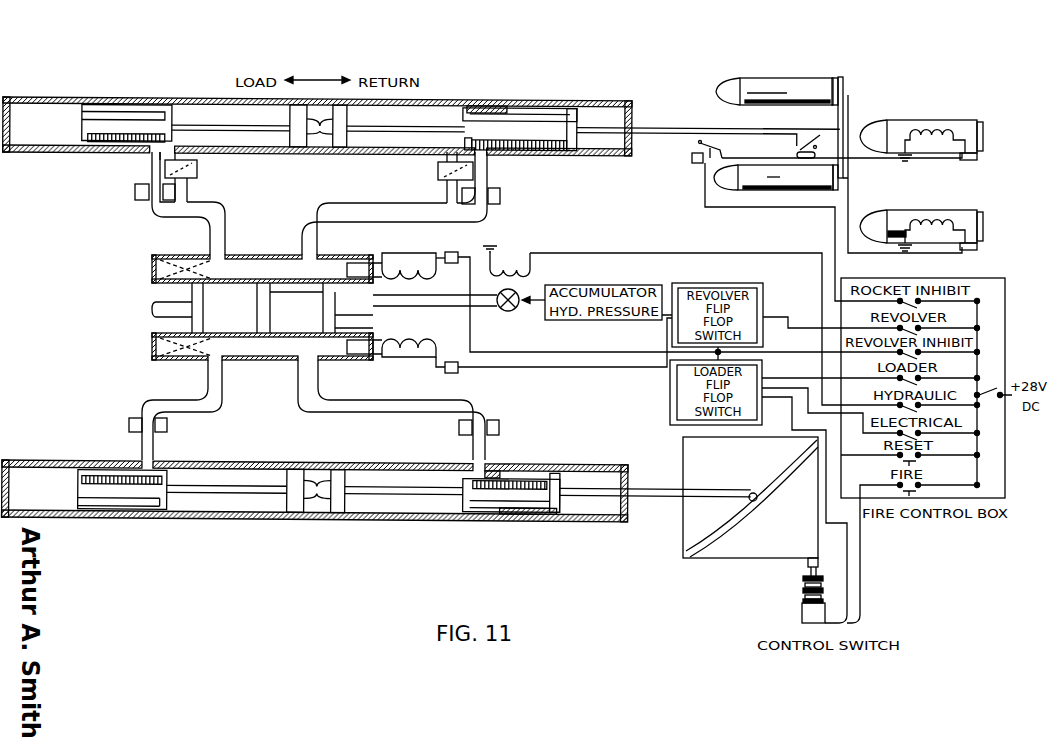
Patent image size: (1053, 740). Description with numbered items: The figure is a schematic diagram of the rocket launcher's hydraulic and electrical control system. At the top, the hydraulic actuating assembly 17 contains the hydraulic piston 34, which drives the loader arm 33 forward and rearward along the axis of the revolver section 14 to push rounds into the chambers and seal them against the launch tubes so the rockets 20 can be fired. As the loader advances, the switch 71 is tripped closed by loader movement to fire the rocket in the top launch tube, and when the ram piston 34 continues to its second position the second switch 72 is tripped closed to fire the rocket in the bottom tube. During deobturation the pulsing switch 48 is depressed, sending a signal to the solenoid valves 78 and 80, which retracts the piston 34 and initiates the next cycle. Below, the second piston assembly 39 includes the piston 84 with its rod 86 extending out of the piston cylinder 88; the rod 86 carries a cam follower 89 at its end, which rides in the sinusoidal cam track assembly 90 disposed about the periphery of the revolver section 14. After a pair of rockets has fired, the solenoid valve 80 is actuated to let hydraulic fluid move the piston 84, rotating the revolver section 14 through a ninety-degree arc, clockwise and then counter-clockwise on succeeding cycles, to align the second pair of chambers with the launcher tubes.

The hydraulic actuating assembly 17 is at (497, 83).
The hydraulic piston 34 is at (315, 141).
The loader arm 33 is at (731, 128).
The rocket 20 is at (807, 77).
The second switch 72 is at (705, 162).
The switch 71 is at (808, 160).
The solenoid valve 78 is at (448, 250).
The solenoid valve 80 is at (455, 373).
The piston 84 is at (307, 510).
The second piston assembly 39 is at (231, 527).
The piston cylinder 88 is at (518, 520).
The rod 86 is at (666, 498).
The cam follower 89 is at (755, 502).
The sinusoidal cam track assembly 90 is at (690, 554).
The revolver section 14 is at (718, 562).
The pulsing switch 48 is at (802, 617).